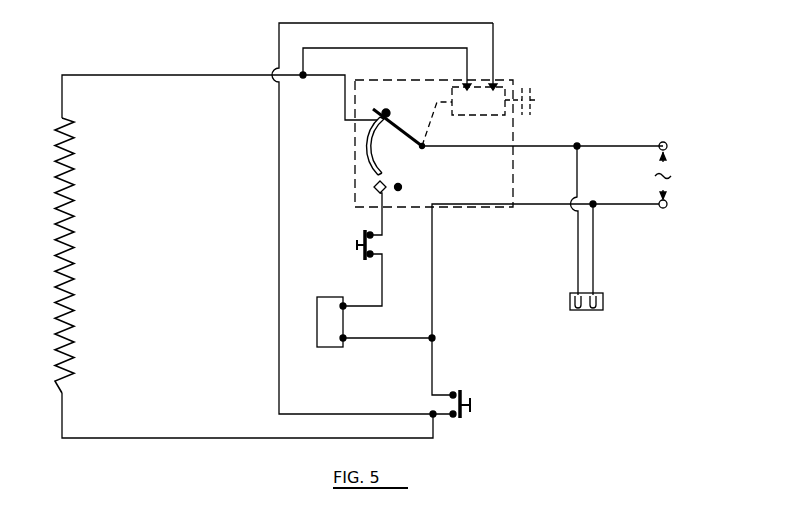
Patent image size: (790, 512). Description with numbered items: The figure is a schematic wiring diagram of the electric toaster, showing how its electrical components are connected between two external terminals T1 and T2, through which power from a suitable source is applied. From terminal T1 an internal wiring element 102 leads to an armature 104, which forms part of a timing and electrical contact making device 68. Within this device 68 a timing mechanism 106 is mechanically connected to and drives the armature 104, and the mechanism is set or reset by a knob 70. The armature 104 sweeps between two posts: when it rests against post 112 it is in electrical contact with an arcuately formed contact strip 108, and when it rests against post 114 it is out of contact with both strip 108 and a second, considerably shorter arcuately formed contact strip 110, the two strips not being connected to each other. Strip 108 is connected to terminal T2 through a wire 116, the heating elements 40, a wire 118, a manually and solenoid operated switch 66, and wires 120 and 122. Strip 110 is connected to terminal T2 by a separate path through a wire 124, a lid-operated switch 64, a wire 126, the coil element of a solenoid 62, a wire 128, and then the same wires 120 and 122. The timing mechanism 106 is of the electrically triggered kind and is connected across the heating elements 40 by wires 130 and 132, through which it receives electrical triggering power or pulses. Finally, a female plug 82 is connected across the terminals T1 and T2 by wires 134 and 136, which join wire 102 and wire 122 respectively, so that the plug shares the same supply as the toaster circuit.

The heating elements 40 is at (56, 243).
The solenoid 62 is at (323, 353).
The lid-operated switch 64 is at (360, 233).
The manually and solenoid operated switch 66 is at (469, 390).
The timing and electrical contact making device 68 is at (526, 133).
The knob 70 is at (538, 91).
The female plug 82 is at (605, 298).
The internal wiring element 102 is at (615, 143).
The armature 104 is at (400, 142).
The timing mechanism 106 is at (488, 120).
The contact strip 108 is at (368, 150).
The contact strip 110 is at (370, 188).
The post 112 is at (386, 108).
The post 114 is at (402, 186).
The wire 116 is at (143, 79).
The wire 118 is at (167, 443).
The wire 120 is at (438, 293).
The wire 122 is at (616, 212).
The wire 124 is at (383, 233).
The wire 126 is at (387, 293).
The wire 128 is at (383, 346).
The wire 130 is at (278, 29).
The wire 132 is at (330, 58).
The wire 134 is at (578, 255).
The wire 136 is at (598, 259).
The external terminal T1 is at (669, 144).
The external terminal T2 is at (669, 202).